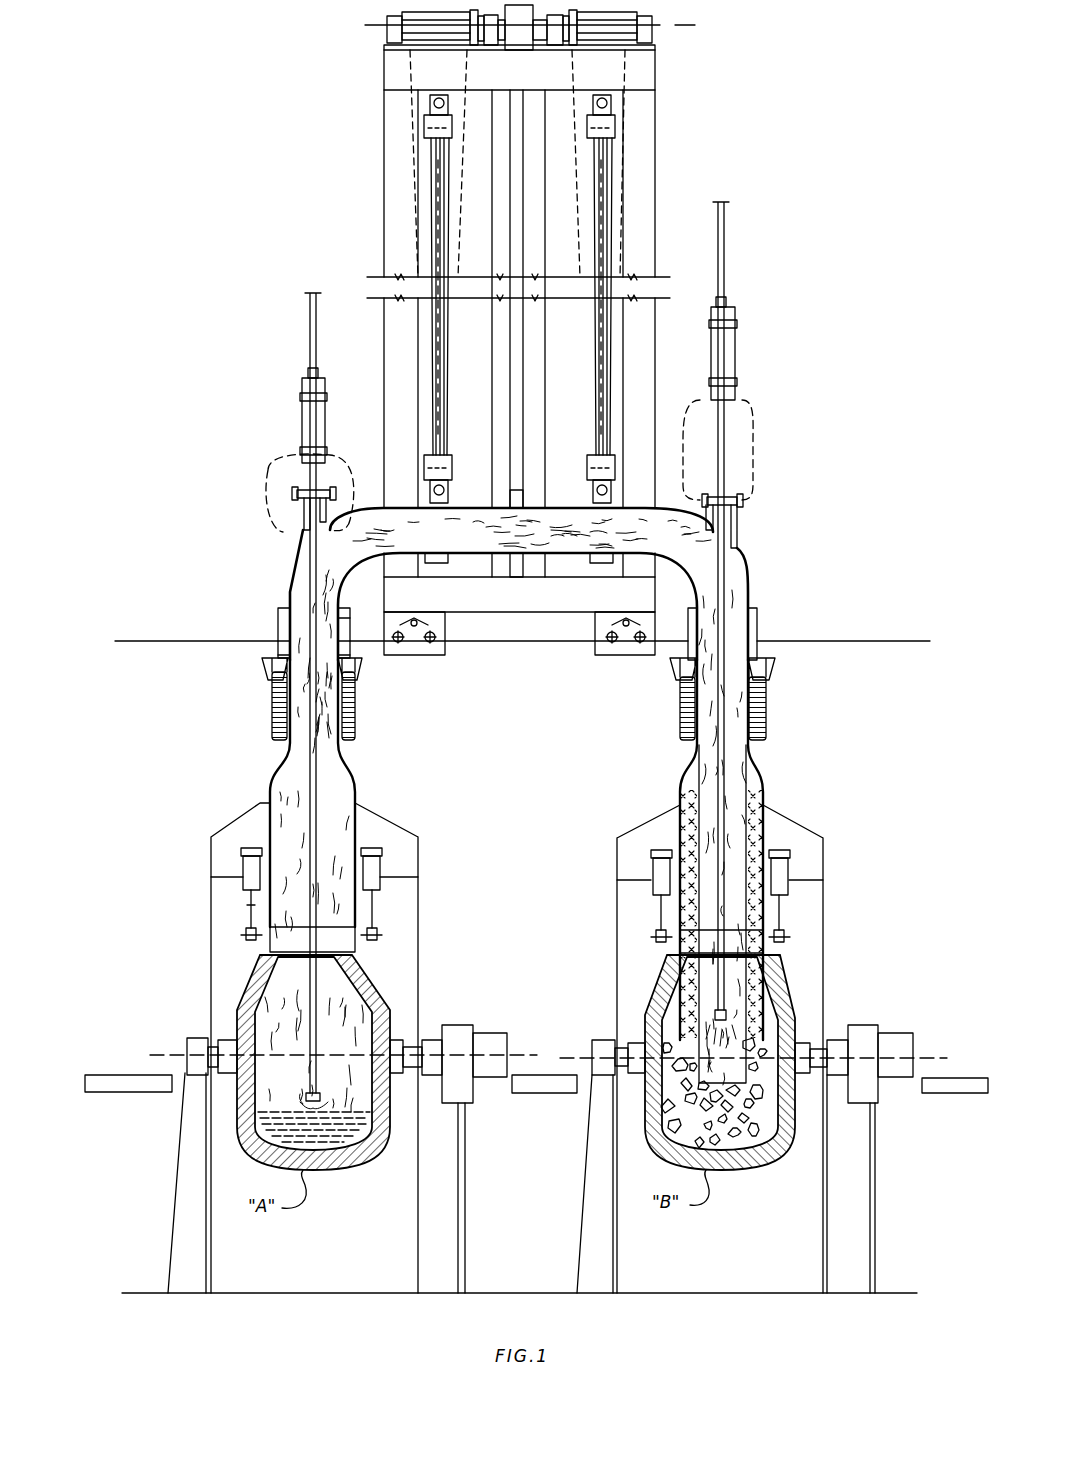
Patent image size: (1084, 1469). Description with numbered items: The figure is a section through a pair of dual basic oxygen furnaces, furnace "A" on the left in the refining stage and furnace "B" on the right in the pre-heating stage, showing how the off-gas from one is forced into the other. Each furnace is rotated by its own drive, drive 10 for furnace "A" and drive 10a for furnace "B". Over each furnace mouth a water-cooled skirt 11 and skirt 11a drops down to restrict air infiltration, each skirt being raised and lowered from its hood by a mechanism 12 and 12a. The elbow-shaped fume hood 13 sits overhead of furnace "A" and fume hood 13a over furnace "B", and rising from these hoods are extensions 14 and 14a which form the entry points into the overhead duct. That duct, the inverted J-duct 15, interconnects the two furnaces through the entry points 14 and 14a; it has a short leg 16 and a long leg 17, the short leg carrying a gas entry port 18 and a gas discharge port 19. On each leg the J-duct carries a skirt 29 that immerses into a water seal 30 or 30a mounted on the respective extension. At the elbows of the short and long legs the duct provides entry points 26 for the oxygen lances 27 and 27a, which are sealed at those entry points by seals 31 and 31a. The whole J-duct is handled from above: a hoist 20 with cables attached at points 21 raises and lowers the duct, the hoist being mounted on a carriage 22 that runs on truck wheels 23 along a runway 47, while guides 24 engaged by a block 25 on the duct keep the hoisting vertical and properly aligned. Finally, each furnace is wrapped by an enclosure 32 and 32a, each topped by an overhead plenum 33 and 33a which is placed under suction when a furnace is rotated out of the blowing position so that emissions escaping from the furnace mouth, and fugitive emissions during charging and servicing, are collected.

The drive 10 is at (492, 1033).
The drive 10a is at (898, 1033).
The skirt 11 is at (260, 957).
The skirt 11a is at (683, 946).
The mechanism 12 is at (245, 885).
The mechanism 12a is at (653, 890).
The fume hood 13 is at (345, 790).
The fume hood 13a is at (760, 822).
The extension 14 is at (270, 664).
The extension 14a is at (757, 655).
The J-duct 15 is at (383, 512).
The short leg 16 is at (289, 630).
The long leg 17 is at (762, 975).
The gas entry port 18 is at (340, 640).
The gas discharge port 19 is at (750, 1045).
The hoist 20 is at (600, 10).
The attachment points 21 is at (450, 487).
The carriage 22 is at (546, 604).
The truck wheels 23 is at (415, 678).
The guides 24 is at (533, 399).
The block 25 is at (517, 490).
The entry points 26 is at (304, 525).
The oxygen lance 27 is at (300, 565).
The oxygen lance 27a is at (730, 582).
The skirt 29 is at (283, 610).
The water seal 30 is at (274, 700).
The water seal 30a is at (768, 690).
The seal 31 is at (300, 488).
The seal 31a is at (742, 493).
The enclosure 32 is at (211, 936).
The enclosure 32a is at (617, 911).
The plenum 33 is at (225, 848).
The plenum 33a is at (635, 846).
The runway 47 is at (196, 641).